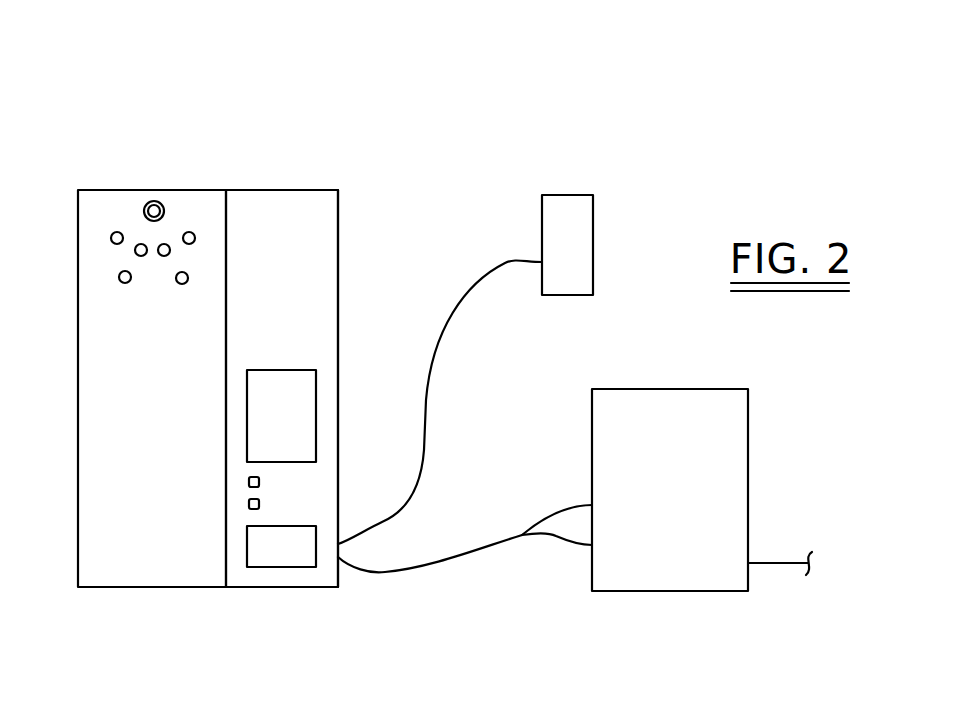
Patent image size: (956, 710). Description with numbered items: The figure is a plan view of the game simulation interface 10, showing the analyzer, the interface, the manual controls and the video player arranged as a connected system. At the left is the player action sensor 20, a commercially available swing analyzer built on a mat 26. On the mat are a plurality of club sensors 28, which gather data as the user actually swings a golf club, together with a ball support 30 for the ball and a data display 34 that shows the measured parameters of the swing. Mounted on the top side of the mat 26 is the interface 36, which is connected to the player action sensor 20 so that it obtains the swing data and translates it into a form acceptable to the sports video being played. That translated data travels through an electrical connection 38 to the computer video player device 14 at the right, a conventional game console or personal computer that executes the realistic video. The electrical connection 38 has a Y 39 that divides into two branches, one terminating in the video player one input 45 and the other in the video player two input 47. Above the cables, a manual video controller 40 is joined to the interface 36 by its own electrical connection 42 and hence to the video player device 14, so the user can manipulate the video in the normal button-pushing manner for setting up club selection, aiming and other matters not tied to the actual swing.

The game simulation interface 10 is at (253, 158).
The computer video player device 14 is at (723, 480).
The player action sensor 20 is at (312, 287).
The mat 26 is at (320, 225).
The club sensors 28 is at (163, 256).
The ball support 30 is at (148, 203).
The data display 34 is at (285, 417).
The interface 36 is at (279, 552).
The electrical connection 38 is at (440, 562).
The Y 39 is at (522, 535).
The manual video controller 40 is at (567, 205).
The electrical connection 42 is at (427, 398).
The video player 1 input 45 is at (557, 540).
The video player 2 input 47 is at (558, 508).